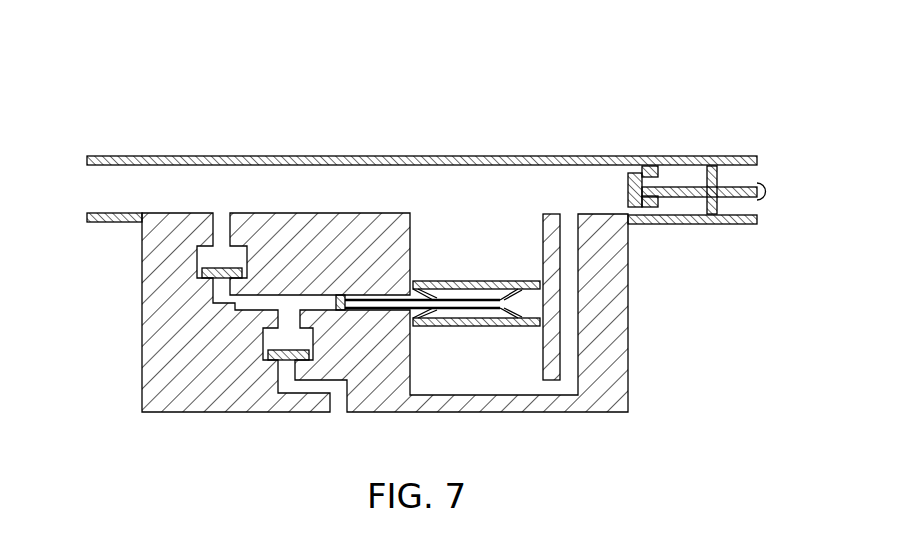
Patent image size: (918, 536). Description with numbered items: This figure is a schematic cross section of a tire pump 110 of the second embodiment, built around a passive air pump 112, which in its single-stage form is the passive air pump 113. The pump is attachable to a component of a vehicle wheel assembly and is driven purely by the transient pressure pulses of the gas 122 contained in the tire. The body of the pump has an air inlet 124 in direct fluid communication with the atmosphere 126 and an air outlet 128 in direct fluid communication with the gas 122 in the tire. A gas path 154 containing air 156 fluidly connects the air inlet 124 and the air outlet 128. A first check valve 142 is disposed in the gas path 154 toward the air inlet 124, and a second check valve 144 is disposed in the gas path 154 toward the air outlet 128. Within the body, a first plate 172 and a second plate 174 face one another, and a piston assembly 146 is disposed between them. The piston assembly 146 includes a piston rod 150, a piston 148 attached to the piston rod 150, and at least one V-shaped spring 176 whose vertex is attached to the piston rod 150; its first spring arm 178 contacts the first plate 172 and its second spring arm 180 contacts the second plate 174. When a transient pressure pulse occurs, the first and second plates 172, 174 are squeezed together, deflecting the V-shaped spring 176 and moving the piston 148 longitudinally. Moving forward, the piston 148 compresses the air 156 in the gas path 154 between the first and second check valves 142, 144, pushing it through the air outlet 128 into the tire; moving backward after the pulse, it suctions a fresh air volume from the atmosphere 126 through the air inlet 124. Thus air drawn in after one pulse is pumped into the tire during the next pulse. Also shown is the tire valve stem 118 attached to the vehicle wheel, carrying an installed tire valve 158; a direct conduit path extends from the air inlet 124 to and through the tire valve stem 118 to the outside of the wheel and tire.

The tire pump 110 is at (236, 91).
The tire valve stem 118 is at (575, 157).
The air outlet 128 is at (97, 190).
The gas 122 is at (124, 214).
The passive air pump 112 is at (636, 364).
The single-stage passive air pump 113 is at (636, 394).
The second check valve 144 is at (223, 267).
The first check valve 142 is at (278, 360).
The gas path 154 is at (212, 303).
The air 156 is at (230, 312).
The air inlet 124 is at (337, 408).
The piston 148 is at (340, 295).
The piston rod 150 is at (468, 300).
The V-shaped spring 176 is at (434, 290).
The first spring arm 178 is at (506, 292).
The first plate 172 is at (452, 281).
The second plate 174 is at (440, 326).
The second spring arm 180 is at (508, 324).
The piston assembly 146 is at (474, 337).
The atmosphere 126 is at (555, 454).
The tire valve 158 is at (770, 181).